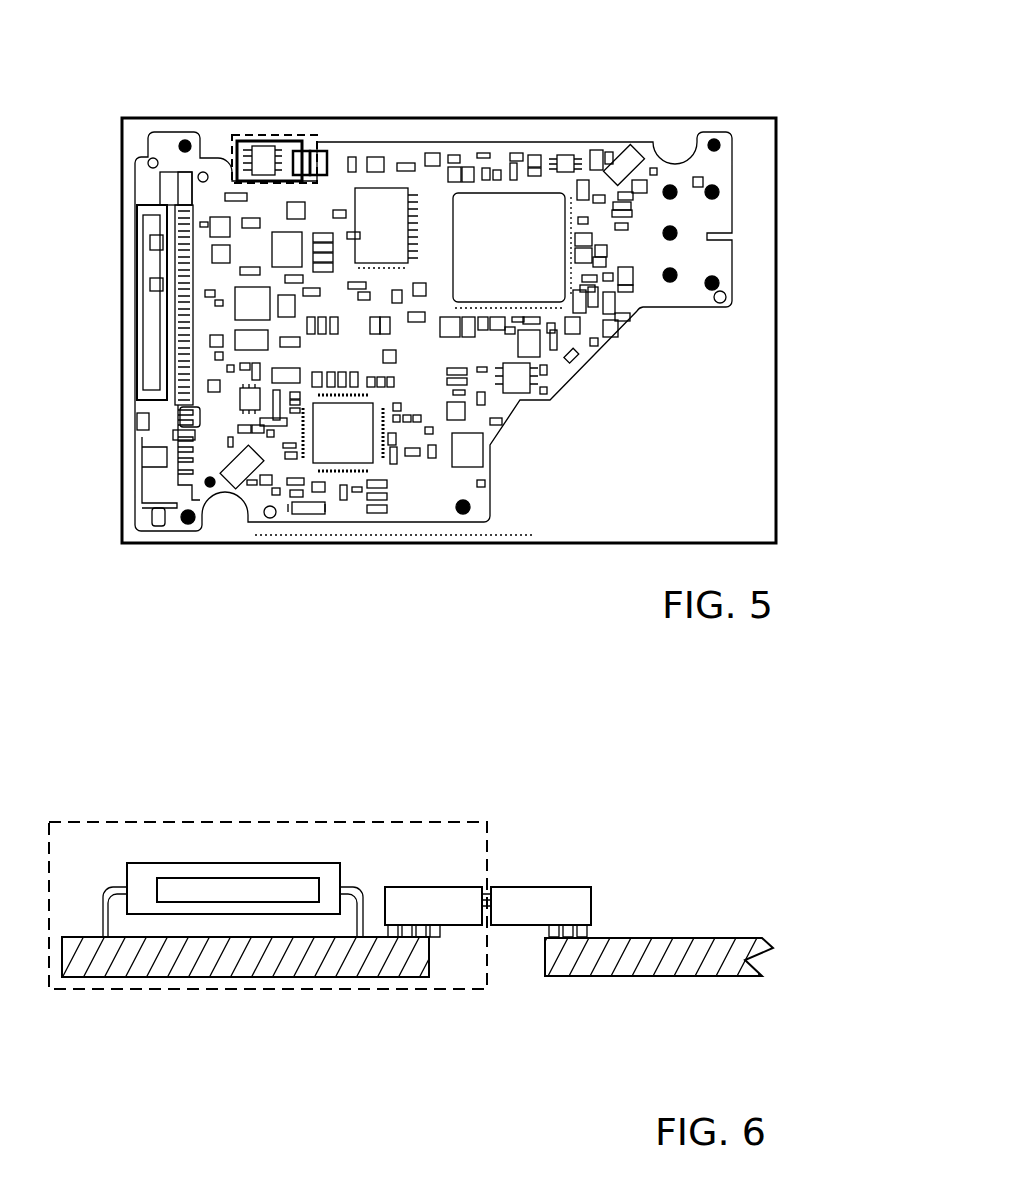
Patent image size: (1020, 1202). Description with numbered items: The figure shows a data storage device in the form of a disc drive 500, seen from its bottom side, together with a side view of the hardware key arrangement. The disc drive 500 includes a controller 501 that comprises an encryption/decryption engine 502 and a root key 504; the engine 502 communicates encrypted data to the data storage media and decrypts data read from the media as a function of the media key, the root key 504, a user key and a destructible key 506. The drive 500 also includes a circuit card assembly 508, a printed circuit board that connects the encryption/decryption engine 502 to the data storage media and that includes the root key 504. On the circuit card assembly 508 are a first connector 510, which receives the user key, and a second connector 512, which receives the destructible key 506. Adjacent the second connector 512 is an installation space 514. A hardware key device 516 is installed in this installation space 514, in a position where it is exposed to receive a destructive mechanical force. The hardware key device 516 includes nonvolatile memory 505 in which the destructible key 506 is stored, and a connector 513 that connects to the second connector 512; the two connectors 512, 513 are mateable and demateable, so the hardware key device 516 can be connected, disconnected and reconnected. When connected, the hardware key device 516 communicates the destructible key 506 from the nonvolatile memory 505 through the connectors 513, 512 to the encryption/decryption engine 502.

In FIG. 5, the disc drive 500 is at (812, 121).
In FIG. 5, the controller 501 is at (450, 166).
In FIG. 5, the encryption/decryption engine 502 is at (450, 166).
In FIG. 5, the root key 504 is at (493, 193).
In FIG. 5, the nonvolatile memory 505 is at (192, 135).
In FIG. 6, the nonvolatile memory 505 is at (165, 878).
In FIG. 5, the destructible key 506 is at (192, 135).
In FIG. 6, the destructible key 506 is at (227, 814).
In FIG. 5, the hardware key device 516 is at (262, 148).
In FIG. 6, the hardware key device 516 is at (207, 878).
In FIG. 5, the circuit card assembly 508 is at (541, 147).
In FIG. 6, the circuit card assembly 508 is at (665, 938).
In FIG. 5, the first connector 510 is at (137, 316).
In FIG. 5, the second connector 512 is at (318, 150).
In FIG. 6, the second connector 512 is at (545, 887).
In FIG. 5, the connector 513 is at (302, 143).
In FIG. 6, the connector 513 is at (435, 887).
In FIG. 5, the installation space 514 is at (184, 157).
In FIG. 6, the installation space 514 is at (300, 822).